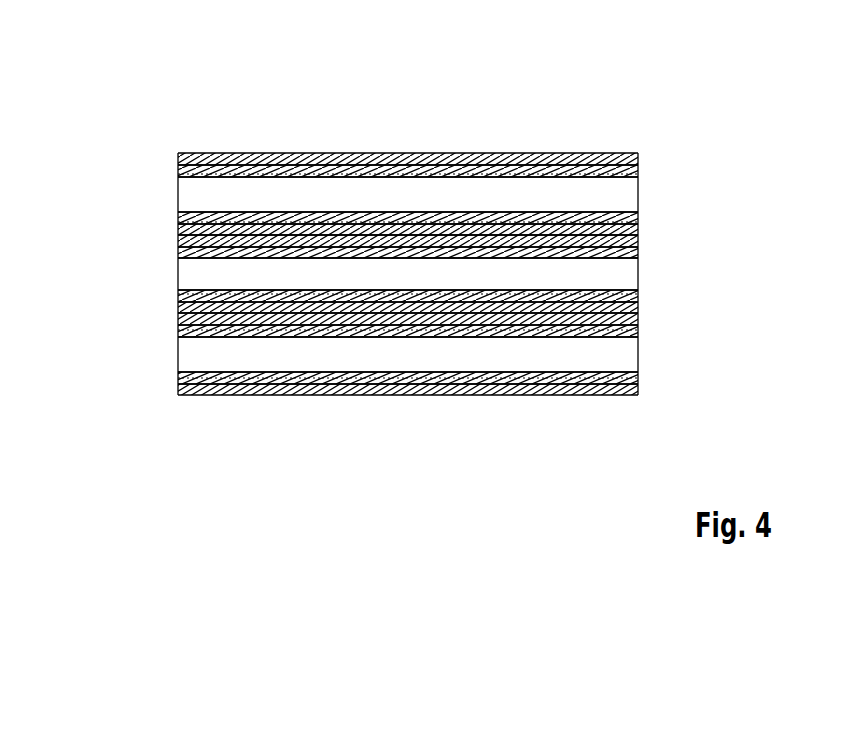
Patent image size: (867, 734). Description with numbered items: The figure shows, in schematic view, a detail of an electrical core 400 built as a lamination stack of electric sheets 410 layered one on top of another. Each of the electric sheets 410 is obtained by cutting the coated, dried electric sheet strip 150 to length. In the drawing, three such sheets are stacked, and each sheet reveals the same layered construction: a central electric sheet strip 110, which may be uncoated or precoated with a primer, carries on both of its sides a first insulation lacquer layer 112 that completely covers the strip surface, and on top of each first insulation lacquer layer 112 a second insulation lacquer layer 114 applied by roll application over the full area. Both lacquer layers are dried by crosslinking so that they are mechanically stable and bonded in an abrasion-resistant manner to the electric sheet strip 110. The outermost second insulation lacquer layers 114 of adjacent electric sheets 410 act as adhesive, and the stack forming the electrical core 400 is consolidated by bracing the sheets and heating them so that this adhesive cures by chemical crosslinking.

The electrical core 400 is at (512, 82).
The electric sheets 410 is at (730, 107).
The coated, dried electric sheet strip 150 is at (409, 283).
The electric sheet strip 110 is at (640, 188).
The first insulation lacquer layer 112 is at (640, 170).
The second insulation lacquer layer 114 is at (640, 157).